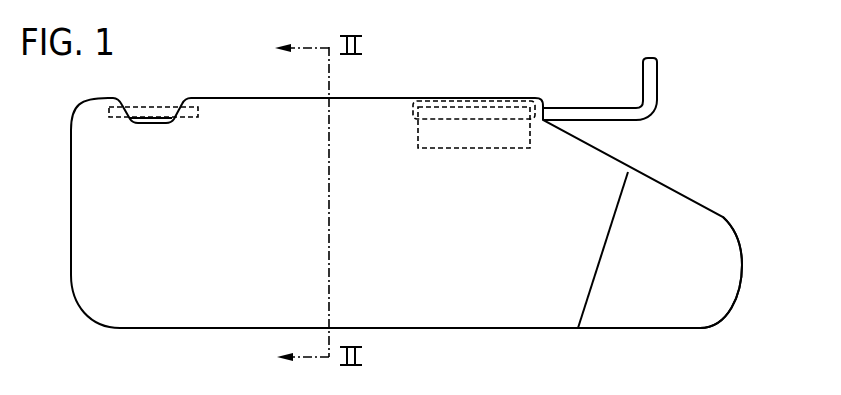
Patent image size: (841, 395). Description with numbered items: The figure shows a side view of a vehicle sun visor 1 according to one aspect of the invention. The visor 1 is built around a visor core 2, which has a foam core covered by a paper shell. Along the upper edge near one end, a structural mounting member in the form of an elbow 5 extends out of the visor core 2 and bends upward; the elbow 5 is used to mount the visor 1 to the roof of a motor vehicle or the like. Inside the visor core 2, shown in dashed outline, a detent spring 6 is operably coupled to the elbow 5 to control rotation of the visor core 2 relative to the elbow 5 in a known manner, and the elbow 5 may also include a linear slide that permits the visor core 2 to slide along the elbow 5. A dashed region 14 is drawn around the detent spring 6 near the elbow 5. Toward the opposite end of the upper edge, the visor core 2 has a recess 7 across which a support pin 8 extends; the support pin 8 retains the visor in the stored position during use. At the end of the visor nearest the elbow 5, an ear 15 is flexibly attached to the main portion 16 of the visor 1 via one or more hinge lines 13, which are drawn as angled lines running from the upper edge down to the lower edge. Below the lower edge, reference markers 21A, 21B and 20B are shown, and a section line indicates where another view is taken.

The visor 1 is at (677, 152).
The visor core 2 is at (705, 222).
The elbow 5 is at (670, 72).
The detent spring 6 is at (452, 98).
The recess 7 is at (166, 101).
The support pin 8 is at (140, 110).
The hinge line 13 is at (615, 218).
The shaft holder 14 is at (483, 97).
The ear 15 is at (698, 290).
The main portion 16 is at (198, 318).
The core member 20B is at (629, 389).
The first core half 21A is at (479, 394).
The second core half 21B is at (495, 394).